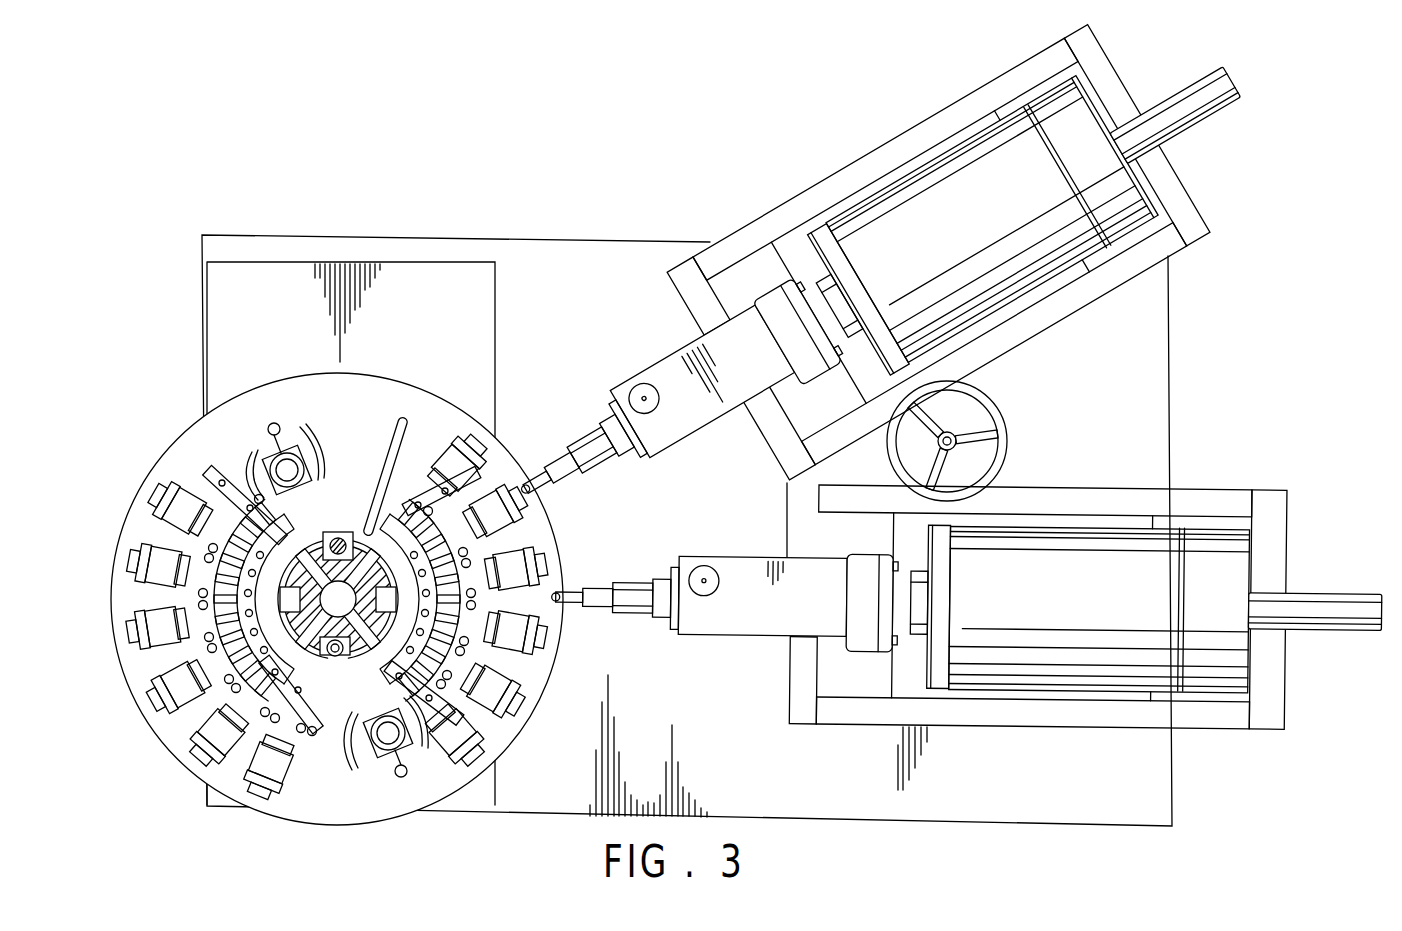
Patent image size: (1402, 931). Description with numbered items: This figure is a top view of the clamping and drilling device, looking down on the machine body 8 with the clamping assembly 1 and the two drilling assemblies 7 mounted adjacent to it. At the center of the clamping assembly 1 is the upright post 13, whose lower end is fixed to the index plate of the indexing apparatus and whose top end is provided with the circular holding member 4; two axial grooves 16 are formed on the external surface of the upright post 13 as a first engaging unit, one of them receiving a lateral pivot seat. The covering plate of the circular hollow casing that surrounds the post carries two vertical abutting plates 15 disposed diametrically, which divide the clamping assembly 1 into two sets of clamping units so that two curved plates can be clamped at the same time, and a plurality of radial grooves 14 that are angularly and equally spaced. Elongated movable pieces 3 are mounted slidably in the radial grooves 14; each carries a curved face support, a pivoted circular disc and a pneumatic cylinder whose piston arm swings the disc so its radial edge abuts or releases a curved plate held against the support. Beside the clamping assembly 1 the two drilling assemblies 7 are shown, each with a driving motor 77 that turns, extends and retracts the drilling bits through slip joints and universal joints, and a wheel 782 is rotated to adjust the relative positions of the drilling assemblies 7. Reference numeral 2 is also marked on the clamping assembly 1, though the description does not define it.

The clamping assembly 1 is at (425, 388).
The chuck hub 2 is at (347, 532).
The elongated movable piece 3 is at (553, 475).
The circular holding member 4 is at (336, 657).
The drilling assembly 7 is at (1206, 241).
The machine body 8 is at (612, 242).
The upright post 13 is at (317, 552).
The radial grooves 14 is at (392, 430).
The vertical abutting plates 15 is at (222, 470).
The axial grooves 16 is at (327, 535).
The driving motor 77 is at (1196, 132).
The wheel 782 is at (1006, 430).